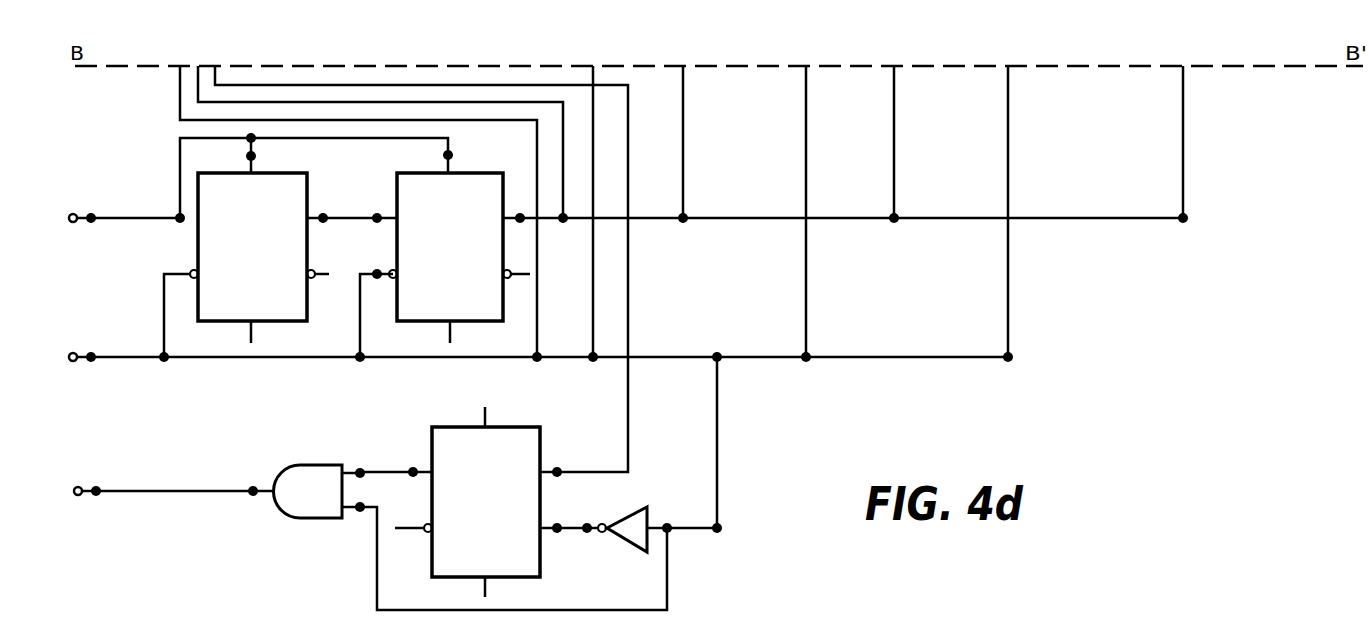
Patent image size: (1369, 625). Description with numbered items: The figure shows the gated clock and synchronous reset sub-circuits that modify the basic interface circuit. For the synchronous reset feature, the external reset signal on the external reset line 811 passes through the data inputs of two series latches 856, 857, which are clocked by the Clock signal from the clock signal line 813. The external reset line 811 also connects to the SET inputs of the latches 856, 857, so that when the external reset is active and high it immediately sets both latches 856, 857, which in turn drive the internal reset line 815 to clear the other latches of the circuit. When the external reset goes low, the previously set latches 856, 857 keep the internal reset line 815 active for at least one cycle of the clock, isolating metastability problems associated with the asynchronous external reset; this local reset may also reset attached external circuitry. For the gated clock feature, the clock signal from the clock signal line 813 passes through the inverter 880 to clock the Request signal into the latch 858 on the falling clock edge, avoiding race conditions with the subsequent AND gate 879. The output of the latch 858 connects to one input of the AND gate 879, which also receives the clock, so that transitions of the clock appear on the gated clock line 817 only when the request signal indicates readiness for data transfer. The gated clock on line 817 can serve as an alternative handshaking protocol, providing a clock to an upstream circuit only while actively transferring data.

The external reset line 811 is at (116, 220).
The Clock_1 signal line 813 is at (137, 359).
The internal reset line 815 is at (705, 220).
The gated clock line 817 is at (163, 493).
The latch 856 is at (307, 187).
The latch 857 is at (522, 150).
The latch 858 is at (432, 430).
The AND gate 879 is at (316, 465).
The inverter 880 is at (645, 507).